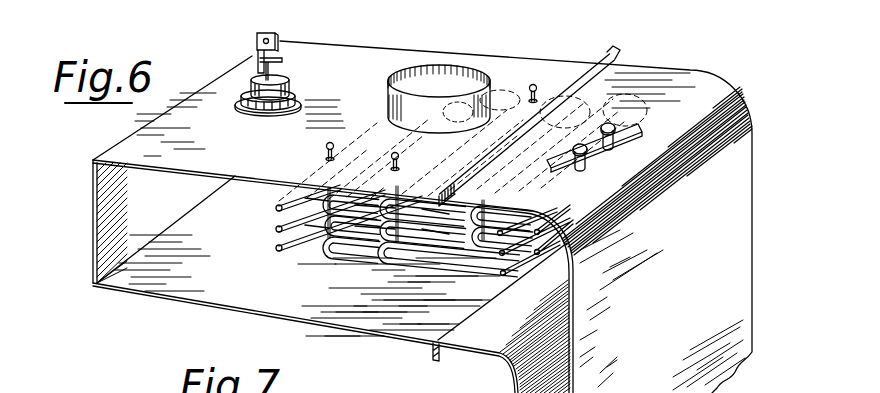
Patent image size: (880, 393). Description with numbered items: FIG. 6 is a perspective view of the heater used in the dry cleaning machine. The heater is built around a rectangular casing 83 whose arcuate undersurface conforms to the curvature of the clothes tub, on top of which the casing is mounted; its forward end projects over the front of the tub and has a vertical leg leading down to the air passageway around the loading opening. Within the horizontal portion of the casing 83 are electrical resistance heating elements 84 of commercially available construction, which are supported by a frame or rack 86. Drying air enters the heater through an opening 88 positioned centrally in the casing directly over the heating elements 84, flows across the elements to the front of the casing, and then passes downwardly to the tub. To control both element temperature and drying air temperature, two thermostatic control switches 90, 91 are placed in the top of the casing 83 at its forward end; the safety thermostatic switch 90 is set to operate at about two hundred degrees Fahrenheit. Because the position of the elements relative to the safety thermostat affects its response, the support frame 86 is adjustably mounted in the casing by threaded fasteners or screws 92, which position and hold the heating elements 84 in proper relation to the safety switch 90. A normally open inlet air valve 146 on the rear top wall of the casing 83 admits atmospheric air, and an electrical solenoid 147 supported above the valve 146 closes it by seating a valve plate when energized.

The casing 83 is at (143, 150).
The heating elements 84 is at (275, 248).
The frame or rack 86 is at (345, 262).
The opening 88 is at (495, 78).
The safety thermostatic switch 90 is at (618, 221).
The thermostatic control switch 91 is at (648, 171).
The threaded fasteners or screws 92 is at (326, 148).
The inlet air valve 146 is at (300, 81).
The electrical solenoid 147 is at (258, 48).